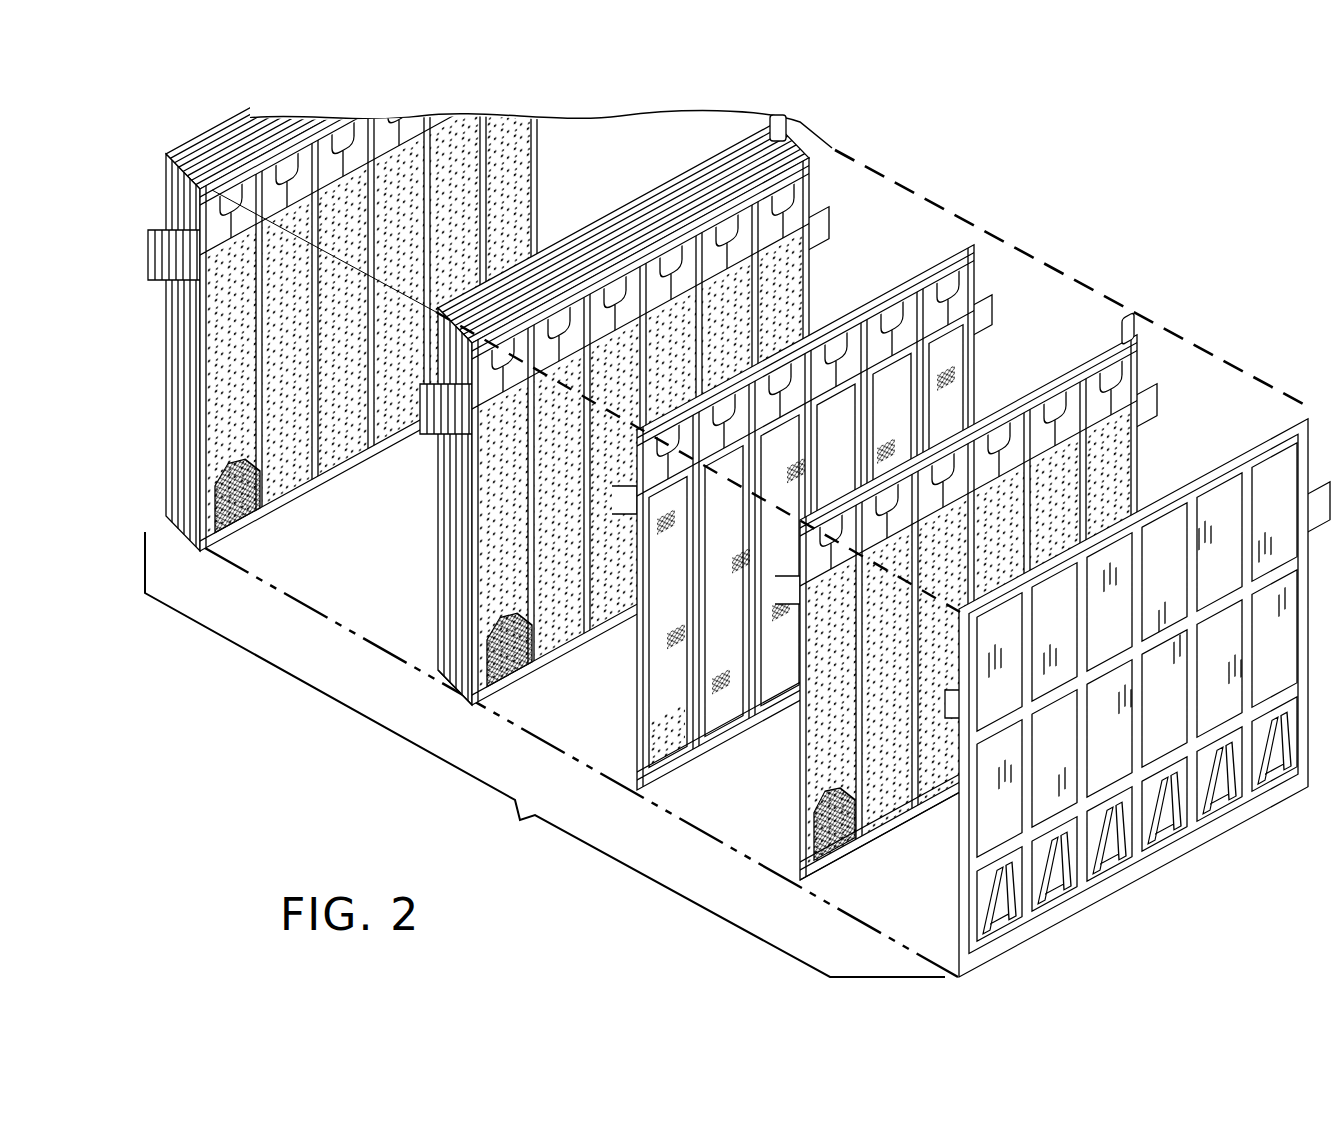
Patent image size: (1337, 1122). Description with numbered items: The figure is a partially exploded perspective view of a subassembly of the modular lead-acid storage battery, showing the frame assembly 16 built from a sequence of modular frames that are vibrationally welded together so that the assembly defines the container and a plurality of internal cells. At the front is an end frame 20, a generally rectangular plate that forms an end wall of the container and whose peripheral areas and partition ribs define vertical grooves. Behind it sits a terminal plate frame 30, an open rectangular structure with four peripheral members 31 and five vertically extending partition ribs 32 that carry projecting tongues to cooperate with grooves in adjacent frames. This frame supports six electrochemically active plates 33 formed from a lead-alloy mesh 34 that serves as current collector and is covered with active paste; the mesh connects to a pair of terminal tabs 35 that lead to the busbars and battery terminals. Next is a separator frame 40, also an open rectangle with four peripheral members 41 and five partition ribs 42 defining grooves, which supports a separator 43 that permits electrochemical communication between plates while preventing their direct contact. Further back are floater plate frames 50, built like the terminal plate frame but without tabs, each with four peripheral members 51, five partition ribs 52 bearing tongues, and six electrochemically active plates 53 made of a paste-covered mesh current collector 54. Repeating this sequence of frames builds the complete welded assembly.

The frame assembly 16 is at (551, 754).
The end frame 20 is at (1300, 406).
The terminal plate frame 30 is at (1005, 510).
The peripheral members 31 is at (968, 773).
The partition ribs 32 is at (915, 639).
The electrochemically active plates 33 is at (834, 818).
The lead-alloy mesh 34 is at (968, 787).
The terminal tabs 35 is at (1128, 328).
The separator frame 40 is at (840, 466).
The peripheral members 41 is at (805, 679).
The partition ribs 42 is at (752, 549).
The separator 43 is at (680, 745).
The floater plate frame 50 is at (520, 365).
The peripheral members 51 is at (531, 494).
The partition ribs 52 is at (587, 463).
The electrochemically active plates 53 is at (509, 643).
The mesh current collector 54 is at (508, 657).